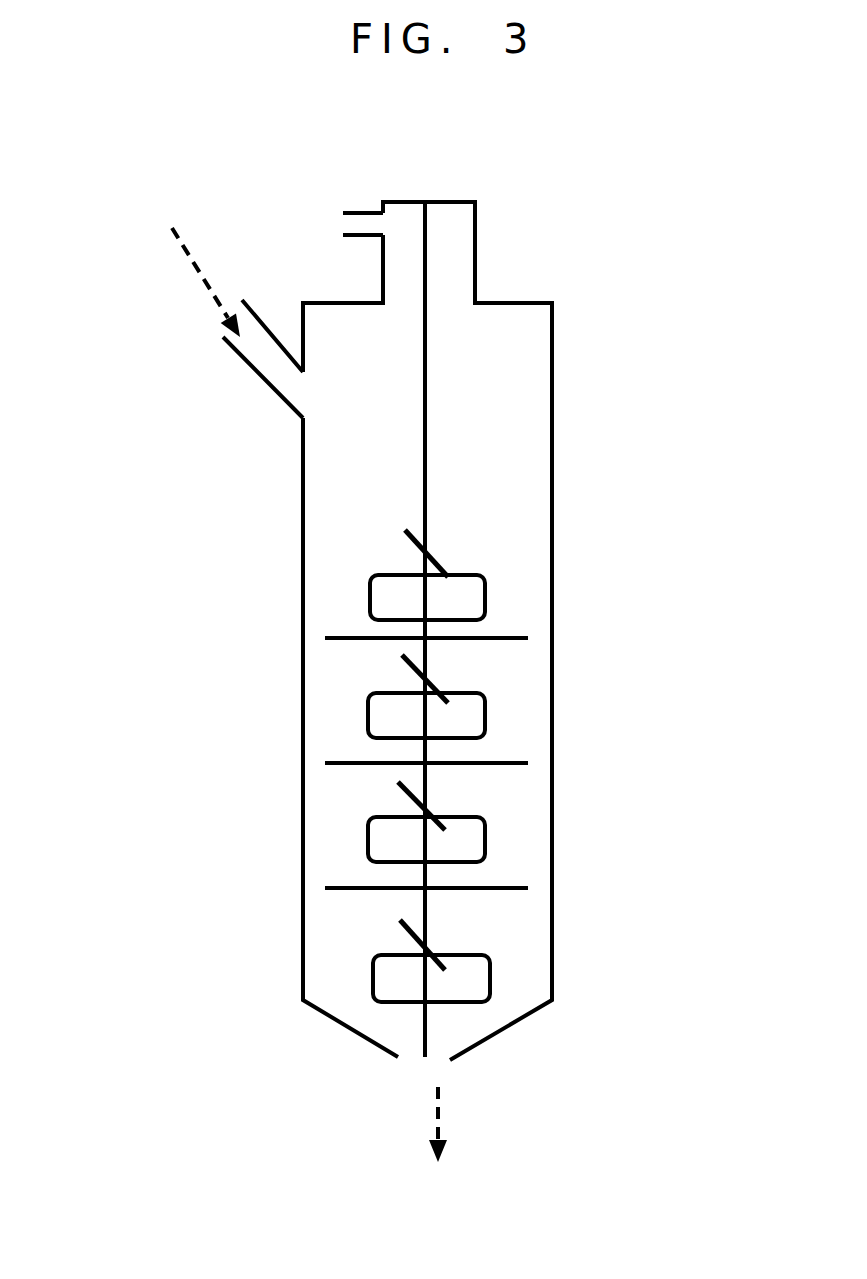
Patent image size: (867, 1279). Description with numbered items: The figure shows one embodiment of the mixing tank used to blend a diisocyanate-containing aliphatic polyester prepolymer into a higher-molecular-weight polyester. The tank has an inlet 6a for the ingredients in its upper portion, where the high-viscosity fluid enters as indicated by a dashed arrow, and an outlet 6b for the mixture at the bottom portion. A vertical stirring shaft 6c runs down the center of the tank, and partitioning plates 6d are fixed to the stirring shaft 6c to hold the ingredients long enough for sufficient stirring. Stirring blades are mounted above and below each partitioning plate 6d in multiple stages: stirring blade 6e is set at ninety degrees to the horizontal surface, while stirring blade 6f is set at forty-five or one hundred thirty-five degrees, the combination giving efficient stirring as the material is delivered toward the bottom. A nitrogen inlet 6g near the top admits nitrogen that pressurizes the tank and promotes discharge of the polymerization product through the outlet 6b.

The inlet 6a is at (184, 352).
The outlet 6b is at (412, 1083).
The stirring shaft 6c is at (443, 390).
The partitioning plate 6d is at (534, 655).
The stirring blade 6e is at (454, 782).
The stirring blade 6f is at (390, 750).
The nitrogen inlet 6g is at (329, 235).